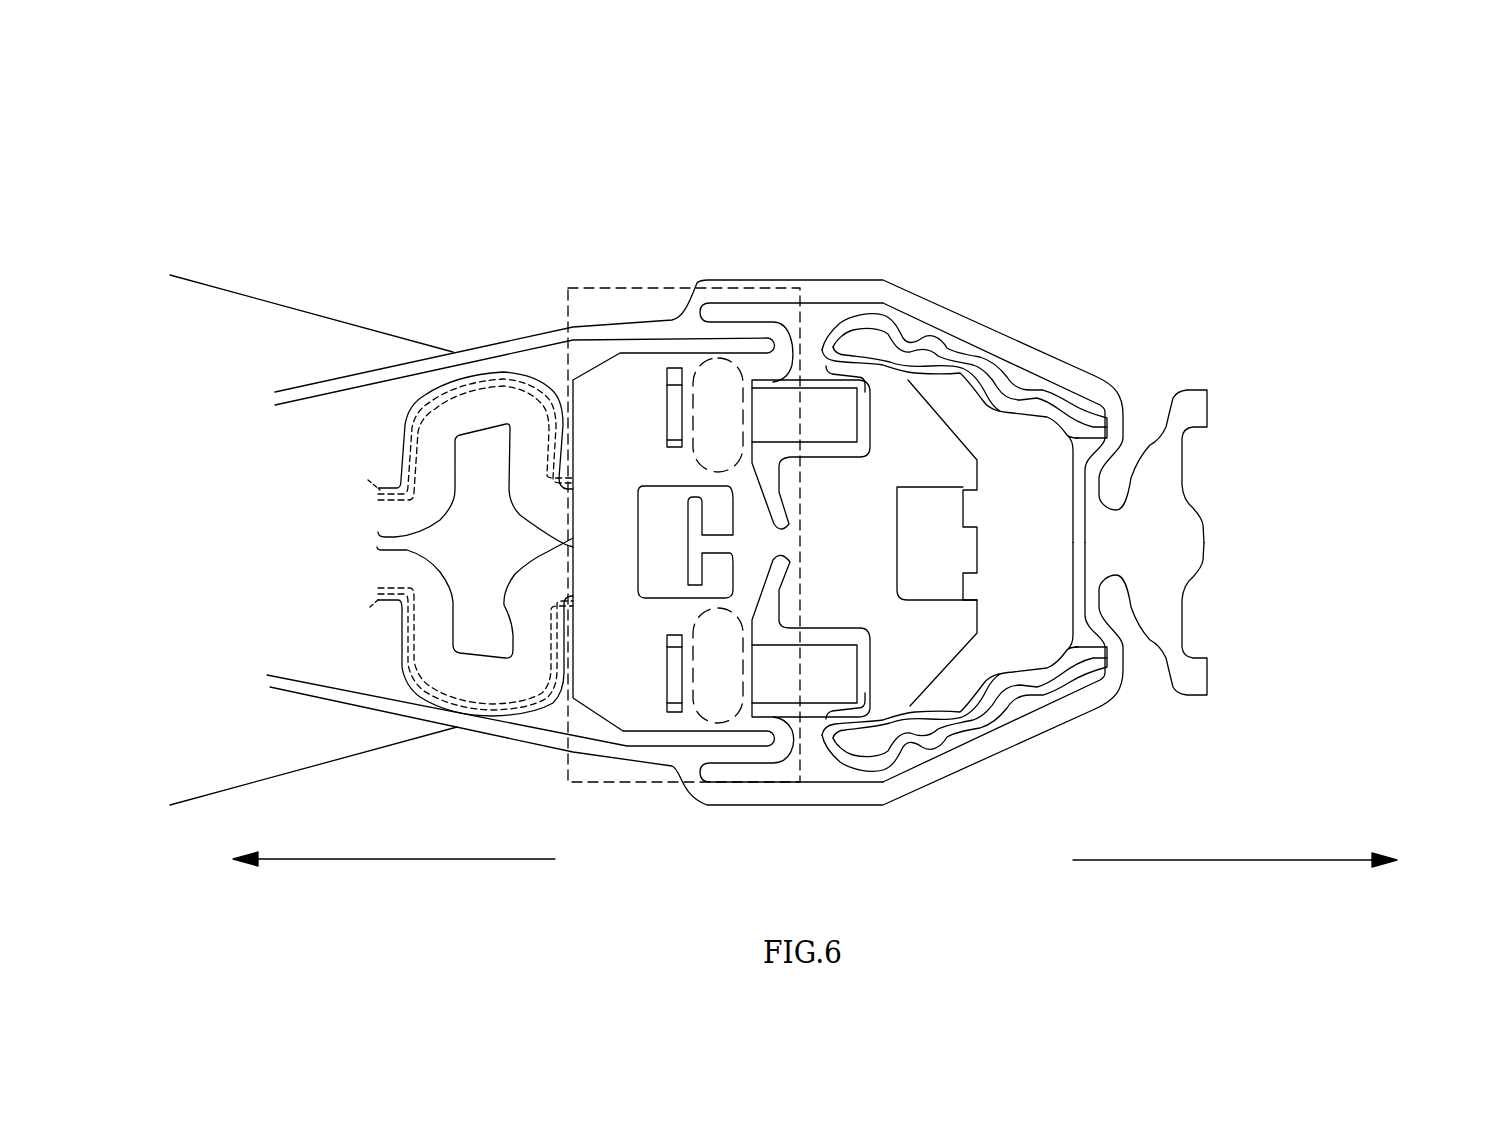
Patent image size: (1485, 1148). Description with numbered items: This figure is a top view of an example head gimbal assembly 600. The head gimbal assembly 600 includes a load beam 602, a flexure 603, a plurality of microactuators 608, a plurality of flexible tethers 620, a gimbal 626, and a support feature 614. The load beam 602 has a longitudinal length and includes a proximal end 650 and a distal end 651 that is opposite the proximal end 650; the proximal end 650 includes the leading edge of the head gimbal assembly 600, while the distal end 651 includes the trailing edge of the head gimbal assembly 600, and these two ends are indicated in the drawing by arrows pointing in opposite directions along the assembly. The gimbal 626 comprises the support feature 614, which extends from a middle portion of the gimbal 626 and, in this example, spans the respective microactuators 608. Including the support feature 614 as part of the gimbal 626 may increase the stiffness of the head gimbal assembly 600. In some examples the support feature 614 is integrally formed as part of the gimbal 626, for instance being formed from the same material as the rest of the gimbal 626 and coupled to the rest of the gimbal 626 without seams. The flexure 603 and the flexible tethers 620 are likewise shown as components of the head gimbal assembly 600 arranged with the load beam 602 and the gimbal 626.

The head gimbal assembly 600 is at (1108, 150).
The load beam 602 is at (285, 348).
The flexure 603 is at (503, 373).
The microactuators 608 is at (803, 403).
The support feature 614 is at (713, 357).
The flexible tethers 620 is at (1058, 405).
The gimbal 626 is at (973, 327).
The proximal end 650 is at (394, 894).
The distal end 651 is at (1235, 884).